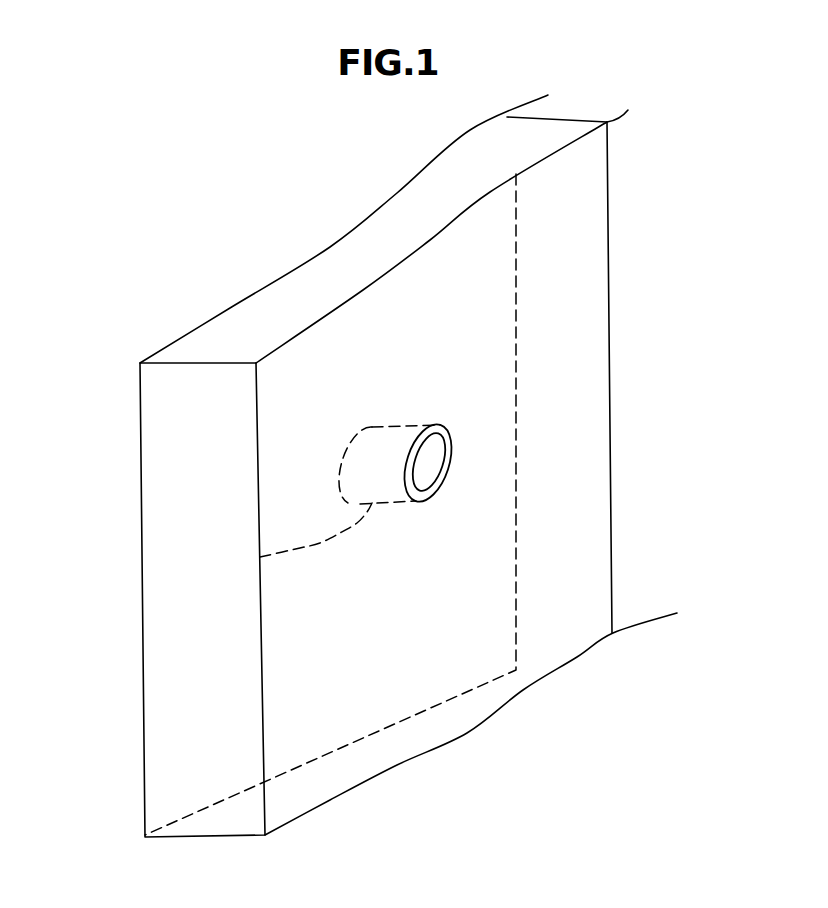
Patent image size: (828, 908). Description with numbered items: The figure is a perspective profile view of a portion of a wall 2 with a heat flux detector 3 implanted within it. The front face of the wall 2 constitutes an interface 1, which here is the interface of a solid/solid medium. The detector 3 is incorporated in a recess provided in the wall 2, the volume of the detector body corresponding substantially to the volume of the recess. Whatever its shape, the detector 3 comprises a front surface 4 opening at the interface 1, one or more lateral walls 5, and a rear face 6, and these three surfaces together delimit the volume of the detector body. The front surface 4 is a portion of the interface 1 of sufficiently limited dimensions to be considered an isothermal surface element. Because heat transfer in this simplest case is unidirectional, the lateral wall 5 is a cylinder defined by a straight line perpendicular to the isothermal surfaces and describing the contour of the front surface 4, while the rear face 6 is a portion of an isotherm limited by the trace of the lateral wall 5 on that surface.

The interface 1 is at (330, 247).
The wall 2 is at (590, 200).
The detector 3 is at (450, 432).
The front surface 4 is at (342, 468).
The lateral wall 5 is at (260, 557).
The rear face 6 is at (450, 465).